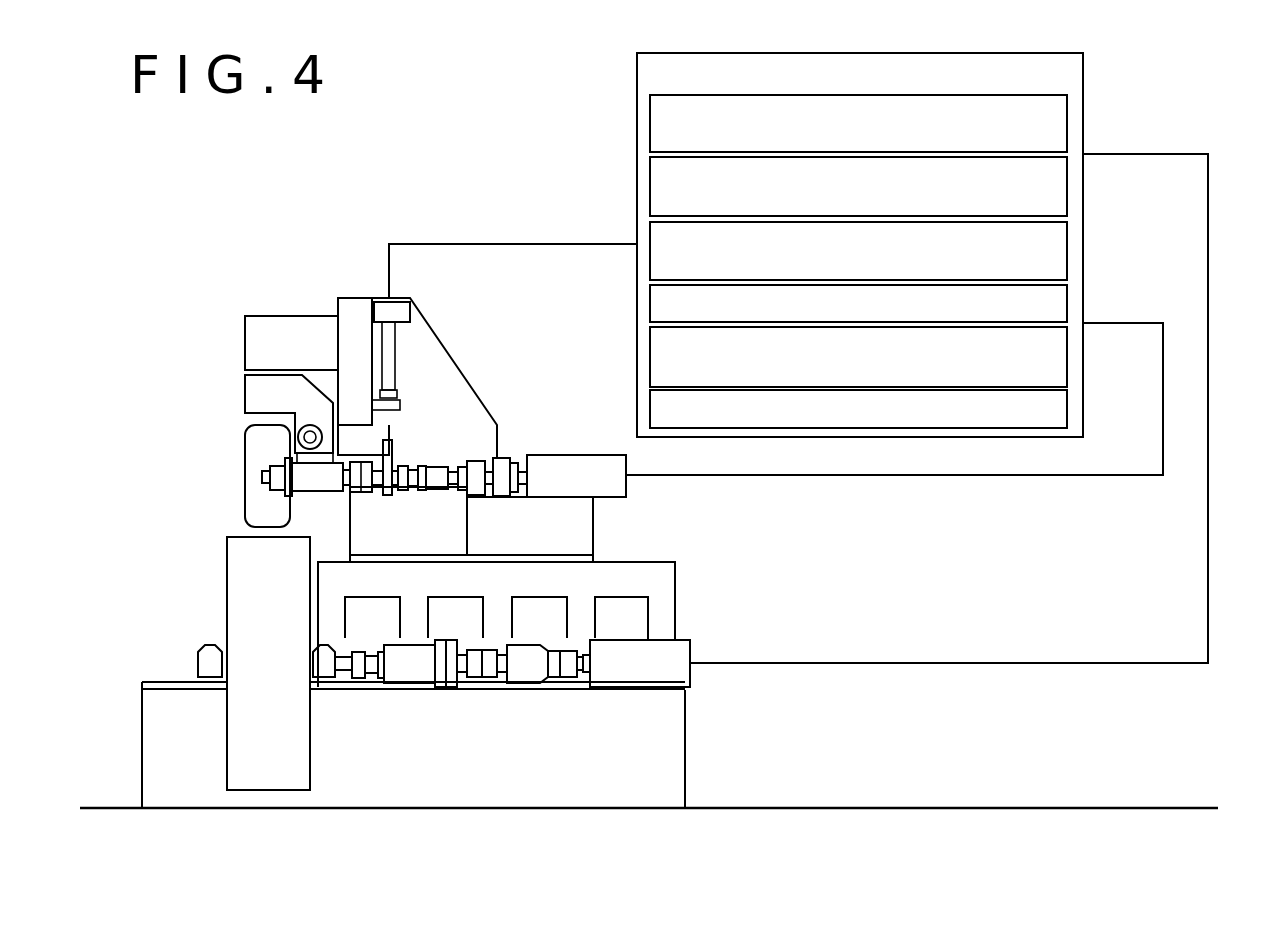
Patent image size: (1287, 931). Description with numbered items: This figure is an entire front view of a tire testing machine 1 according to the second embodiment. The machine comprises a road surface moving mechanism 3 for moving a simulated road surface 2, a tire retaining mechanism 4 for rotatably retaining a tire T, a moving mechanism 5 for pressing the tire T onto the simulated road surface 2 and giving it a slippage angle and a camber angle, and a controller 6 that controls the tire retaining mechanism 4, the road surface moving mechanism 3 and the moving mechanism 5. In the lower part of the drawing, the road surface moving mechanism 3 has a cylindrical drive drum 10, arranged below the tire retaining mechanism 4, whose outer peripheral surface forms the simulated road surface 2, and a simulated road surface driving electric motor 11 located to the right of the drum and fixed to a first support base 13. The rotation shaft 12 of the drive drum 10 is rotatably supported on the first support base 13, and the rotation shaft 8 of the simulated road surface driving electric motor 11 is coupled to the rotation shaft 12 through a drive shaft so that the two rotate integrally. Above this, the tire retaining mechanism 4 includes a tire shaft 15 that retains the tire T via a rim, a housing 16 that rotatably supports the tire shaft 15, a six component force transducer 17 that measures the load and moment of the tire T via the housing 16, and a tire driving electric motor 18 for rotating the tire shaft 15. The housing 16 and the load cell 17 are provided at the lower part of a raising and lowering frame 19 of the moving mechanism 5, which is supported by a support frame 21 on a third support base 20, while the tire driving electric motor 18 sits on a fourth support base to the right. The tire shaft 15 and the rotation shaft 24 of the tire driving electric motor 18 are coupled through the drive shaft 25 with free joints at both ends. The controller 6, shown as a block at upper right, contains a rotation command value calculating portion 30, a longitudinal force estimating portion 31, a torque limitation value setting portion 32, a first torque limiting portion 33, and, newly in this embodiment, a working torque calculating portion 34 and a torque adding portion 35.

The tire testing machine 1 is at (1153, 104).
The simulated road surface 2 is at (240, 529).
The road surface moving mechanism 3 is at (208, 590).
The tire retaining mechanism 4 is at (254, 473).
The moving mechanism 5 is at (263, 306).
The controller 6 is at (636, 122).
The rotation shaft 8 is at (579, 673).
The drive drum 10 is at (243, 618).
The simulated road surface driving electric motor 11 is at (668, 657).
The rotation shaft 12 is at (349, 672).
The first support base 13 is at (668, 748).
The tire shaft 15 is at (265, 478).
The housing 16 is at (316, 492).
The six component force transducer 17 is at (305, 452).
The tire driving electric motor 18 is at (612, 465).
The raising and lowering frame 19 is at (258, 331).
The third support base 20 is at (657, 576).
The support frame 21 is at (452, 378).
The rotation shaft 24 is at (500, 463).
The drive shaft 25 is at (438, 492).
The rotation command value calculating portion 30 is at (1067, 124).
The longitudinal force estimating portion 31 is at (1067, 188).
The torque limitation value setting portion 32 is at (1067, 249).
The first torque limiting portion 33 is at (1067, 303).
The working torque calculating portion 34 is at (1067, 358).
The torque adding portion 35 is at (1067, 411).
The tire T is at (247, 470).